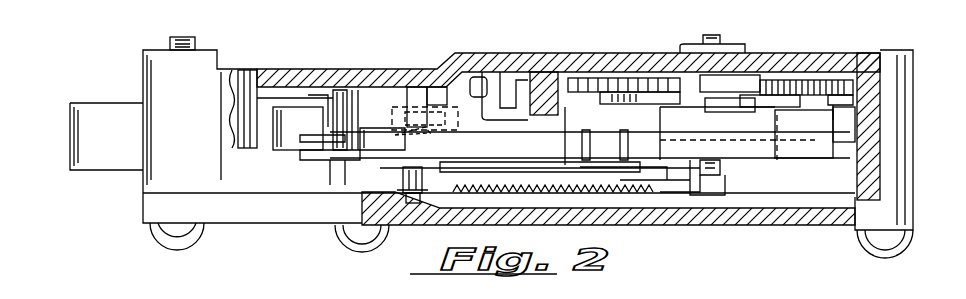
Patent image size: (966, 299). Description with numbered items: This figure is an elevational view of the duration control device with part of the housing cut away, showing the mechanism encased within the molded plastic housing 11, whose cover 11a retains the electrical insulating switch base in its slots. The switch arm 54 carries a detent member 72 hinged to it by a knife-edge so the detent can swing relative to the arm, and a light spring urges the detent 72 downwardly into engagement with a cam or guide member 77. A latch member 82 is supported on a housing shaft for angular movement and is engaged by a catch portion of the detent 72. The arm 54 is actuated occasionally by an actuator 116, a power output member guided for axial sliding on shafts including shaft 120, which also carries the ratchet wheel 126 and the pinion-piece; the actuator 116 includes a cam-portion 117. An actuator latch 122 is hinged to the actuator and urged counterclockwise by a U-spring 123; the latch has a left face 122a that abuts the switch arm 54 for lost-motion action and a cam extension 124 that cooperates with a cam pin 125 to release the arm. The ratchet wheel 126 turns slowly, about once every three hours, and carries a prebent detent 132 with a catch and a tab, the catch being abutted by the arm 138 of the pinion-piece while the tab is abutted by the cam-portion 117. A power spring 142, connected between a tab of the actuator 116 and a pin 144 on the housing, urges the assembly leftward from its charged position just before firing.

The housing 11 is at (278, 72).
The housing cover 11a is at (770, 220).
The arm 54 is at (340, 120).
The detent member 72 is at (375, 110).
The cam or guide member 77 is at (545, 85).
The latch member 82 is at (421, 180).
The actuator 116 is at (557, 147).
The cam-portion 117 is at (840, 138).
The shaft 120 is at (718, 170).
The actuator latch 122 is at (565, 162).
The left face 122a is at (340, 143).
The U-spring 123 is at (660, 168).
The cam extension 124 is at (312, 140).
The cam pin 125 is at (246, 78).
The ratchet wheel 126 is at (617, 85).
The detent 132 is at (828, 102).
The arm 138 is at (778, 100).
The power spring 142 is at (527, 195).
The pin 144 is at (410, 200).